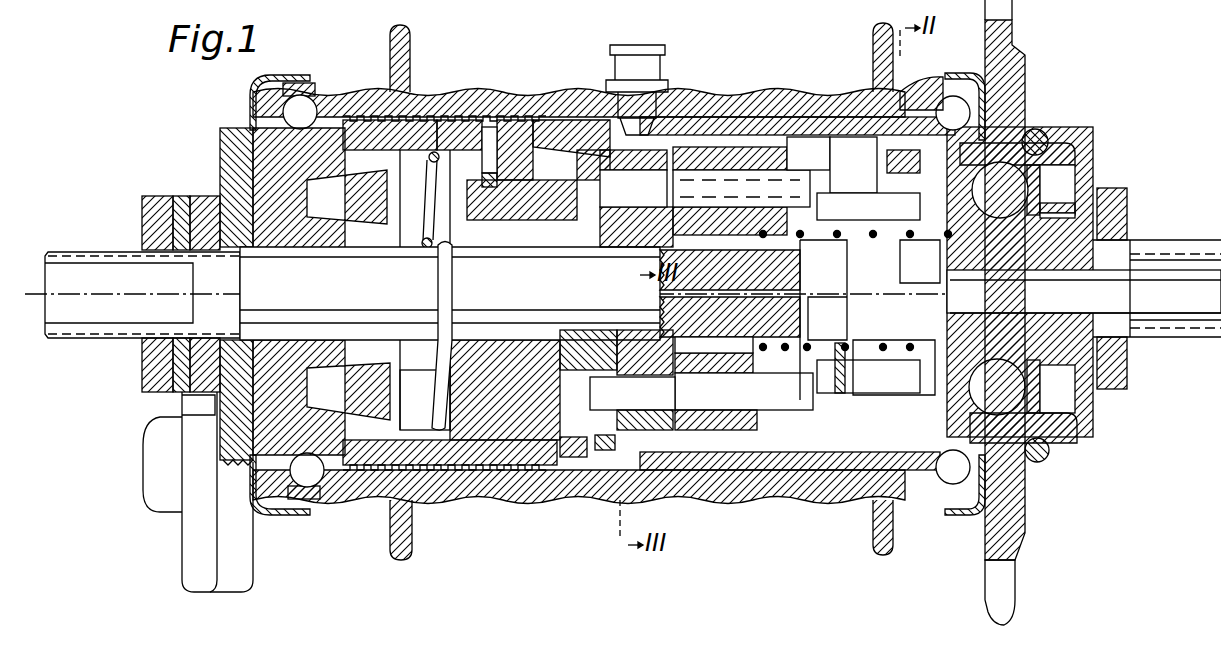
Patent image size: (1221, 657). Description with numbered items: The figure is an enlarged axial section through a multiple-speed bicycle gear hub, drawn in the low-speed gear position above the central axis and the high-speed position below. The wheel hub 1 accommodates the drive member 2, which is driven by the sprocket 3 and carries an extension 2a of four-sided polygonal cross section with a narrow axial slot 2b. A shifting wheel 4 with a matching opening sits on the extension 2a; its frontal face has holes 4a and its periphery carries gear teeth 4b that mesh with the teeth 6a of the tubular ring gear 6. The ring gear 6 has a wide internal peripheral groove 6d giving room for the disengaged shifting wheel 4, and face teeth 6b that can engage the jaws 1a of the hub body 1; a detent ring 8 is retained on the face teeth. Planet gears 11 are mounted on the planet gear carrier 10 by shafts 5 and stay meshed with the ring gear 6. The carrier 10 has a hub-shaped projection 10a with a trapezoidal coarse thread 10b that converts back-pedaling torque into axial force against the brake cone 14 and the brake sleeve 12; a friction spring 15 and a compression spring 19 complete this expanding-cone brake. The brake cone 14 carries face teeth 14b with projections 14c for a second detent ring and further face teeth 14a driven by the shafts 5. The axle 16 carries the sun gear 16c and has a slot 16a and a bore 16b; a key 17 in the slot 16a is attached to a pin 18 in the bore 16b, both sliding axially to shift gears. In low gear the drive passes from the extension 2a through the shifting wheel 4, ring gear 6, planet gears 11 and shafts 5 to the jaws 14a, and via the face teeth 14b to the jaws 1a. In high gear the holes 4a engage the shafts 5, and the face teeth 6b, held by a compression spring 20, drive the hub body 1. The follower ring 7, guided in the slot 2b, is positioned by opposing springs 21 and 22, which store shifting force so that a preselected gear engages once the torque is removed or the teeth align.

The wheel hub 1 is at (325, 95).
The jaws 1a is at (620, 70).
The drive member 2 is at (1060, 152).
The extension 2a is at (1010, 455).
The axial slot 2b is at (930, 400).
The sprocket 3 is at (1010, 10).
The shifting wheel 4 is at (838, 430).
The holes 4a is at (890, 185).
The gear teeth 4b is at (775, 455).
The planet gear shafts 5 is at (745, 400).
The ring gear 6 is at (702, 116).
The teeth 6a is at (862, 140).
The face teeth 6b is at (633, 455).
The peripheral groove 6d is at (780, 148).
The follower ring 7 is at (850, 352).
The detent ring 8 is at (660, 132).
The planet gear carrier 10 is at (590, 145).
The hub-shaped projection 10a is at (455, 228).
The coarse thread 10b is at (530, 228).
The planet gears 11 is at (700, 430).
The brake sleeve 12 is at (385, 127).
The brake cone 14 is at (540, 155).
The face teeth 14a is at (575, 380).
The face teeth 14b is at (545, 467).
The projections 14c is at (585, 470).
The friction spring 15 is at (485, 128).
The axle 16 is at (100, 262).
The slot 16a is at (860, 385).
The bore 16b is at (1135, 300).
The sun gear 16c is at (655, 320).
The key 17 is at (822, 302).
The pin 18 is at (1135, 250).
The compression spring 19 is at (428, 195).
The compression spring 20 is at (895, 405).
The spring 21 is at (830, 165).
The spring 22 is at (890, 348).